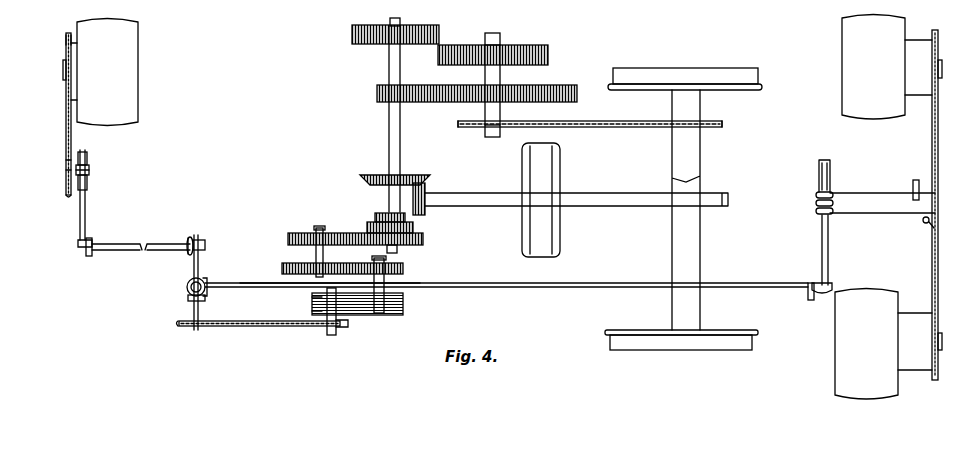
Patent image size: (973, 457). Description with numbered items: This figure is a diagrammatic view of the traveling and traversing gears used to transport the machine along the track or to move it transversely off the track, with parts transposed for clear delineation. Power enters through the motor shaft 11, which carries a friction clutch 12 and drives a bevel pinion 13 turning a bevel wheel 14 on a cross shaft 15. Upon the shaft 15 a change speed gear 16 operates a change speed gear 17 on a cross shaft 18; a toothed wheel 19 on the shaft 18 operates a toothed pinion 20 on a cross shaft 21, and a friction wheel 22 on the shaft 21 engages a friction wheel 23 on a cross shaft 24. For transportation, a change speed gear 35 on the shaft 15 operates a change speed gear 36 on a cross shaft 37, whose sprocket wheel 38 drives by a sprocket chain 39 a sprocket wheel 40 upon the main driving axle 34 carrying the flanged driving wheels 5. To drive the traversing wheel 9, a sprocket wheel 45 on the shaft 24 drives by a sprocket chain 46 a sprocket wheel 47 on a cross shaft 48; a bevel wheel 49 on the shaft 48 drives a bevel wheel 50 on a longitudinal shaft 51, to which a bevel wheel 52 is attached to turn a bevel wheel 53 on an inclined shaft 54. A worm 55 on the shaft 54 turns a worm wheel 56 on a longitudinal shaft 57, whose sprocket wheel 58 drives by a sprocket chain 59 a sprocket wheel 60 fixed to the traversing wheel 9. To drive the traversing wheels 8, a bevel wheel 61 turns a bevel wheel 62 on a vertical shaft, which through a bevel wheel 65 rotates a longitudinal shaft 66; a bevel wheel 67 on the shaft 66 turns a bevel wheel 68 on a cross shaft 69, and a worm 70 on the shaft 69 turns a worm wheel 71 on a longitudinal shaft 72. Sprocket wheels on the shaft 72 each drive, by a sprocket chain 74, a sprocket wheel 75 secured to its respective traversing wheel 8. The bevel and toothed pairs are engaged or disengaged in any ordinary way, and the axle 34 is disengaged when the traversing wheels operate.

The driving wheels 5 is at (650, 76).
The traversing wheels 8 is at (870, 207).
The traversing wheel 9 is at (107, 72).
The motor shaft 11 is at (487, 203).
The friction clutch 12 is at (541, 200).
The bevel pinion 13 is at (425, 192).
The bevel wheel 14 is at (386, 177).
The cross shaft 15 is at (389, 126).
The change speed gear 16 is at (423, 241).
The change speed gear 17 is at (290, 236).
The cross shaft 18 is at (318, 229).
The toothed wheel 19 is at (282, 270).
The toothed pinion 20 is at (403, 268).
The cross shaft 21 is at (405, 283).
The friction wheel 22 is at (403, 304).
The friction wheel 23 is at (312, 303).
The cross shaft 24 is at (345, 325).
The main driving axle 34 is at (686, 210).
The change speed gear 35 is at (380, 85).
The change speed gear 36 is at (548, 58).
The cross shaft 37 is at (500, 35).
The sprocket wheel 38 is at (462, 127).
The sprocket chain 39 is at (615, 127).
The sprocket wheel 40 is at (726, 130).
The sprocket wheel 45 is at (327, 328).
The sprocket chain 46 is at (258, 326).
The sprocket wheel 47 is at (179, 325).
The cross shaft 48 is at (194, 320).
The bevel wheel 49 is at (205, 244).
The bevel wheel 50 is at (188, 246).
The longitudinal shaft 51 is at (126, 250).
The bevel wheel 52 is at (88, 254).
The bevel wheel 53 is at (92, 242).
The inclined shaft 54 is at (80, 218).
The worm 55 is at (89, 172).
The worm wheel 56 is at (87, 158).
The longitudinal shaft 57 is at (66, 178).
The sprocket wheel 58 is at (66, 163).
The sprocket chain 59 is at (66, 131).
The sprocket wheel 60 is at (66, 99).
The bevel wheel 61 is at (188, 298).
The bevel wheel 62 is at (187, 287).
The bevel wheel 65 is at (207, 280).
The longitudinal shaft 66 is at (228, 288).
The bevel wheel 67 is at (811, 301).
The bevel wheel 68 is at (832, 287).
The cross shaft 69 is at (66, 50).
The worm 70 is at (816, 206).
The worm wheel 71 is at (819, 181).
The longitudinal shaft 72 is at (882, 203).
The sprocket chain 74 is at (932, 141).
The sprocket wheel 75 is at (935, 30).